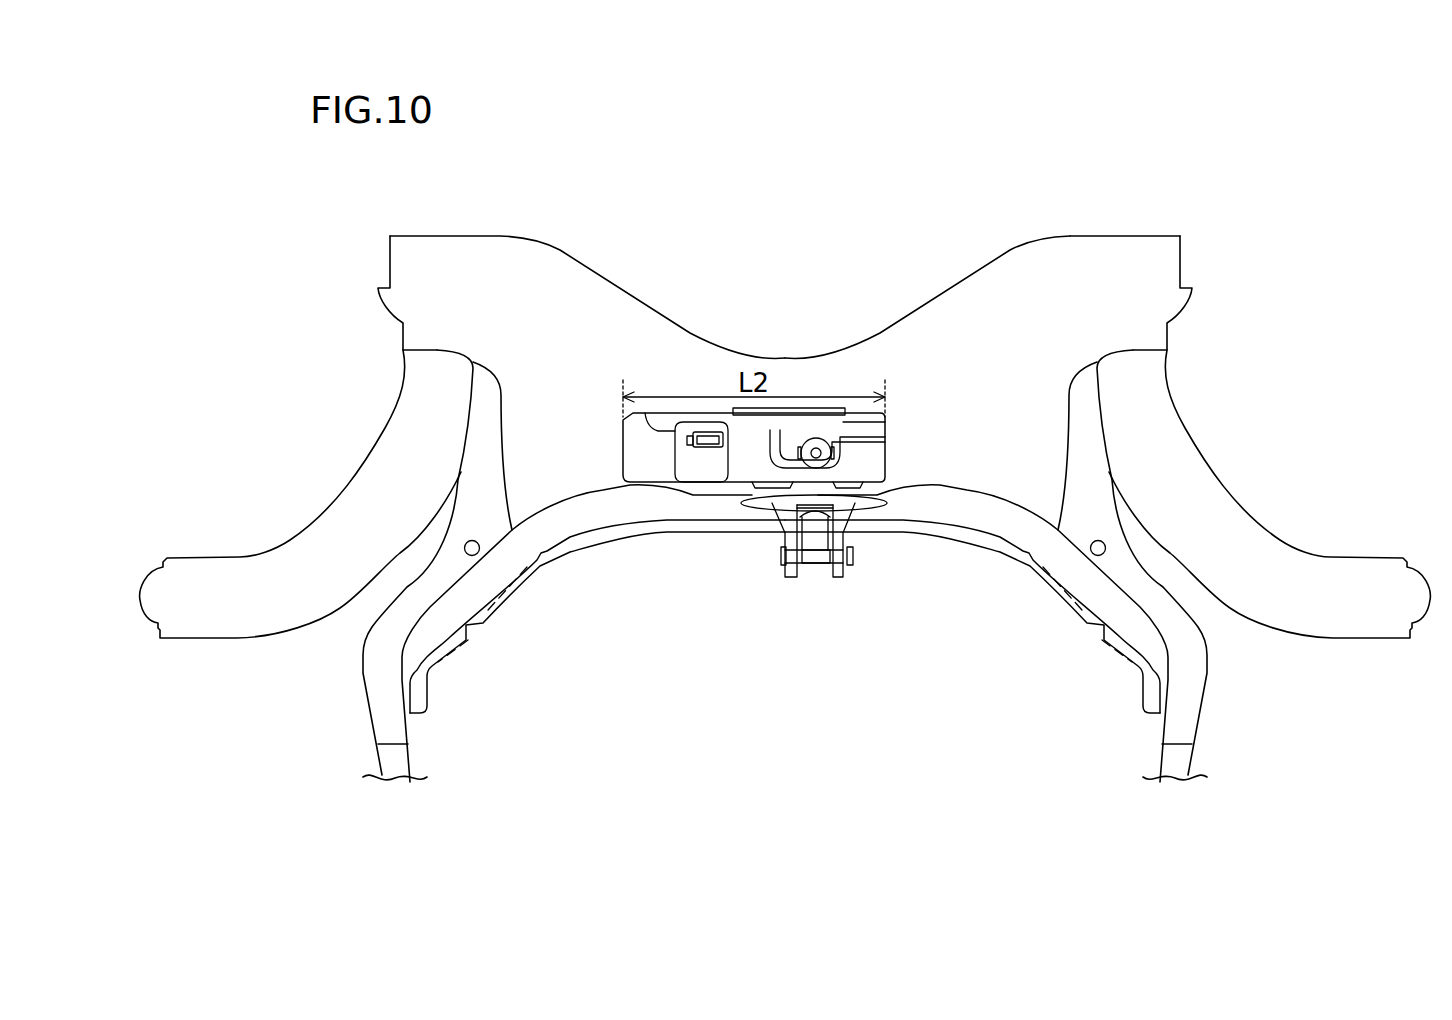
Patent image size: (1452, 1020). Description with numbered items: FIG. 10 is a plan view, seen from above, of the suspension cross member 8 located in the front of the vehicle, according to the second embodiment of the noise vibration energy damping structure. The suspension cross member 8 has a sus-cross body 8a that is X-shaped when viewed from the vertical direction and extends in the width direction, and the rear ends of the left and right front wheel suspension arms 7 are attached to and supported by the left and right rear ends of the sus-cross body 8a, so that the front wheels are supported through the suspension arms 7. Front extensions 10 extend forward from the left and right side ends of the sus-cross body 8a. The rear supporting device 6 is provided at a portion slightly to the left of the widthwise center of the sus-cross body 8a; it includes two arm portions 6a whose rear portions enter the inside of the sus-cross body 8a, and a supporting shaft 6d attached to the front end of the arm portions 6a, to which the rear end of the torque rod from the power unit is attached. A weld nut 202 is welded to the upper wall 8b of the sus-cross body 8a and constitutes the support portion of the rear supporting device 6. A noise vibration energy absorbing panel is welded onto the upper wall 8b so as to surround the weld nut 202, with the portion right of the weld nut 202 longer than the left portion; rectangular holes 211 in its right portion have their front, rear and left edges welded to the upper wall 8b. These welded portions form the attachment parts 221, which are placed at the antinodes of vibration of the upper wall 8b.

The rear supporting device 6 is at (850, 593).
The arm portions 6a is at (788, 570).
The supporting shaft 6d is at (813, 560).
The front wheel suspension arms 7 is at (357, 486).
The suspension cross member 8 is at (1010, 193).
The sus-cross body 8a is at (1095, 248).
The upper wall 8b is at (996, 344).
The front extensions 10 is at (393, 763).
The weld nut 202 is at (818, 452).
The rectangular holes 211 is at (702, 440).
The attachment parts 221 is at (758, 415).